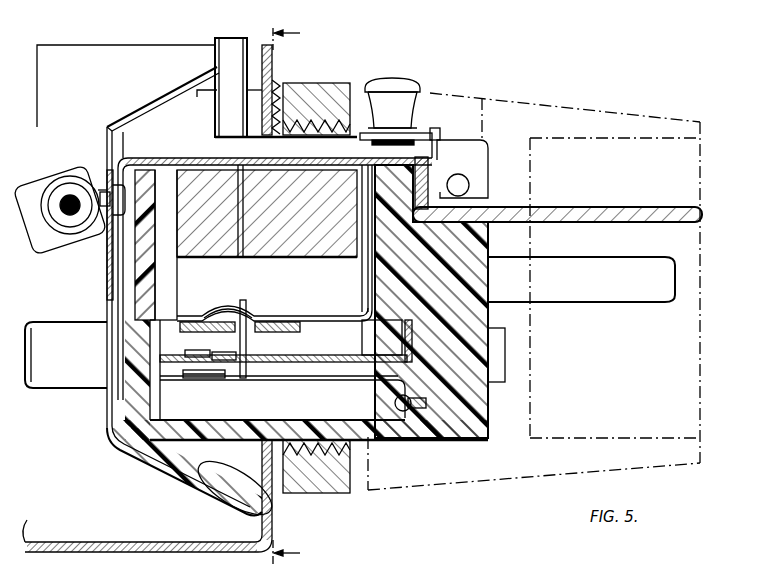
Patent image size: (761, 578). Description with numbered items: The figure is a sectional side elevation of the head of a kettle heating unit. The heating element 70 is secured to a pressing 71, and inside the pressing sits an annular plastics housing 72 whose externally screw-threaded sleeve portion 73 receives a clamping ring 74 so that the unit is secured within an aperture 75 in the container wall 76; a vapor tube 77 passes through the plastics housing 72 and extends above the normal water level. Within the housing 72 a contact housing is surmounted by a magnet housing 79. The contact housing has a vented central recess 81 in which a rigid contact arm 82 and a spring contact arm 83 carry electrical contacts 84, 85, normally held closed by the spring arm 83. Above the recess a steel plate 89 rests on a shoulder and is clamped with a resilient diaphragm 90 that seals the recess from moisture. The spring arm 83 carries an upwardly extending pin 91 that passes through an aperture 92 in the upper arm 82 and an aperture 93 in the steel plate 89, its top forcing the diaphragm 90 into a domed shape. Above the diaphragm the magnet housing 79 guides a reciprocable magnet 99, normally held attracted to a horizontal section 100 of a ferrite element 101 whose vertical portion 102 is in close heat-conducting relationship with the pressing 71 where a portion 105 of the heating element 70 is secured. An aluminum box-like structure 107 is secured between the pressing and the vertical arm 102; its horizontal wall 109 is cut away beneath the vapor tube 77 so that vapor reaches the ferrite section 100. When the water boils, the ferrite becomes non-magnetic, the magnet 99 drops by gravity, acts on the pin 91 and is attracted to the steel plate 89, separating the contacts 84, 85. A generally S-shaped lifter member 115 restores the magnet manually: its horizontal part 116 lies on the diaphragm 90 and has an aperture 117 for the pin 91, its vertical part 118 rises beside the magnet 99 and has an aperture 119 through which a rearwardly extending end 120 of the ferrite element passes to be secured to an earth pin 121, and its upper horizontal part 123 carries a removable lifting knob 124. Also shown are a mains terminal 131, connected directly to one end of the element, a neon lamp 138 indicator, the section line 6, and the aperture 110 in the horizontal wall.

The section line 6- 6 is at (332, 44).
The heating element 70 is at (47, 372).
The pressing 71 is at (134, 460).
The plastics housing 72 is at (271, 496).
The sleeve portion 73 is at (363, 443).
The clamping ring 74 is at (325, 92).
The aperture 75 is at (210, 495).
The container wall 76 is at (270, 46).
The vapor tube 77 is at (220, 42).
The magnet housing 79 is at (143, 237).
The central recess 81 is at (163, 393).
The rigid contact arm 82 is at (294, 360).
The spring contact arm 83 is at (280, 383).
The electrical contact 84 is at (188, 358).
The electrical contact 85 is at (180, 380).
The steel plate 89 is at (298, 314).
The resilient diaphragm 90 is at (257, 304).
The pin 91 is at (249, 346).
The aperture 92 is at (233, 358).
The aperture 93 is at (228, 304).
The magnet 99 is at (236, 195).
The horizontal section 100 is at (200, 158).
The ferrite element 101 is at (141, 150).
The vertical portion 102 is at (113, 262).
The portion of heating element 105 is at (33, 183).
The aluminum box-like structure 107 is at (108, 280).
The horizontal wall 109 is at (352, 148).
The cover flange 110 is at (170, 150).
The lifter member 115 is at (428, 142).
The horizontal part 116 is at (188, 316).
The aperture 117 is at (281, 313).
The vertical part 118 is at (444, 301).
The aperture 119 is at (368, 196).
The rearwardly extending end 120 is at (416, 152).
The earth pin 121 is at (630, 212).
The upper horizontal part 123 is at (412, 130).
The lifting knob 124 is at (393, 78).
The mains terminal 131 is at (628, 264).
The neon lamp 138 is at (469, 186).